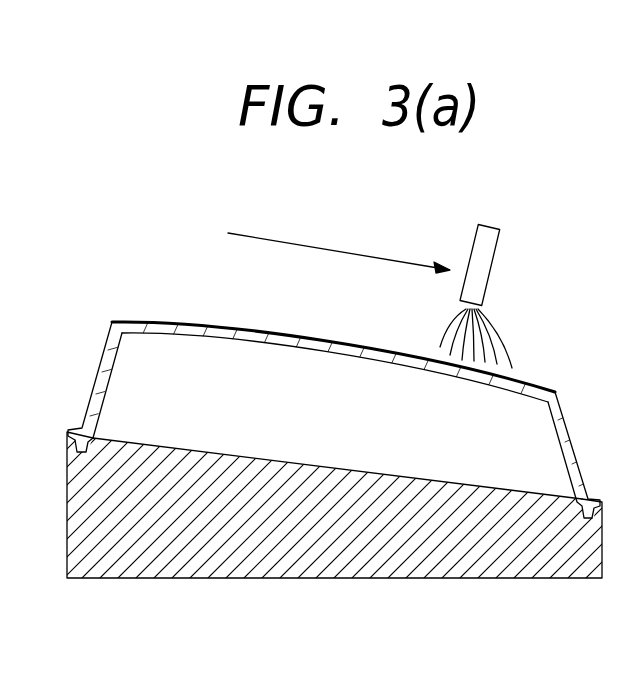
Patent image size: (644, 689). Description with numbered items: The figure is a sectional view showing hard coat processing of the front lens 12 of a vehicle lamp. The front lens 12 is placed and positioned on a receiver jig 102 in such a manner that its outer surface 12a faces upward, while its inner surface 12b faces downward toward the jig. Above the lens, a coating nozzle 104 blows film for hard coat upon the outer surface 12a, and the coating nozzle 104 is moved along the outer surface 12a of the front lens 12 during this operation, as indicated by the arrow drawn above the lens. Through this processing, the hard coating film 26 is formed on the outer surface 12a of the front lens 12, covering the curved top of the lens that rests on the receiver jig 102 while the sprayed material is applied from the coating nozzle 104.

The front lens 12 is at (334, 373).
The outer surface 12a is at (530, 380).
The inner surface 12b is at (348, 357).
The hard coating film 26 is at (277, 332).
The receiver jig 102 is at (413, 565).
The coating nozzle 104 is at (489, 270).